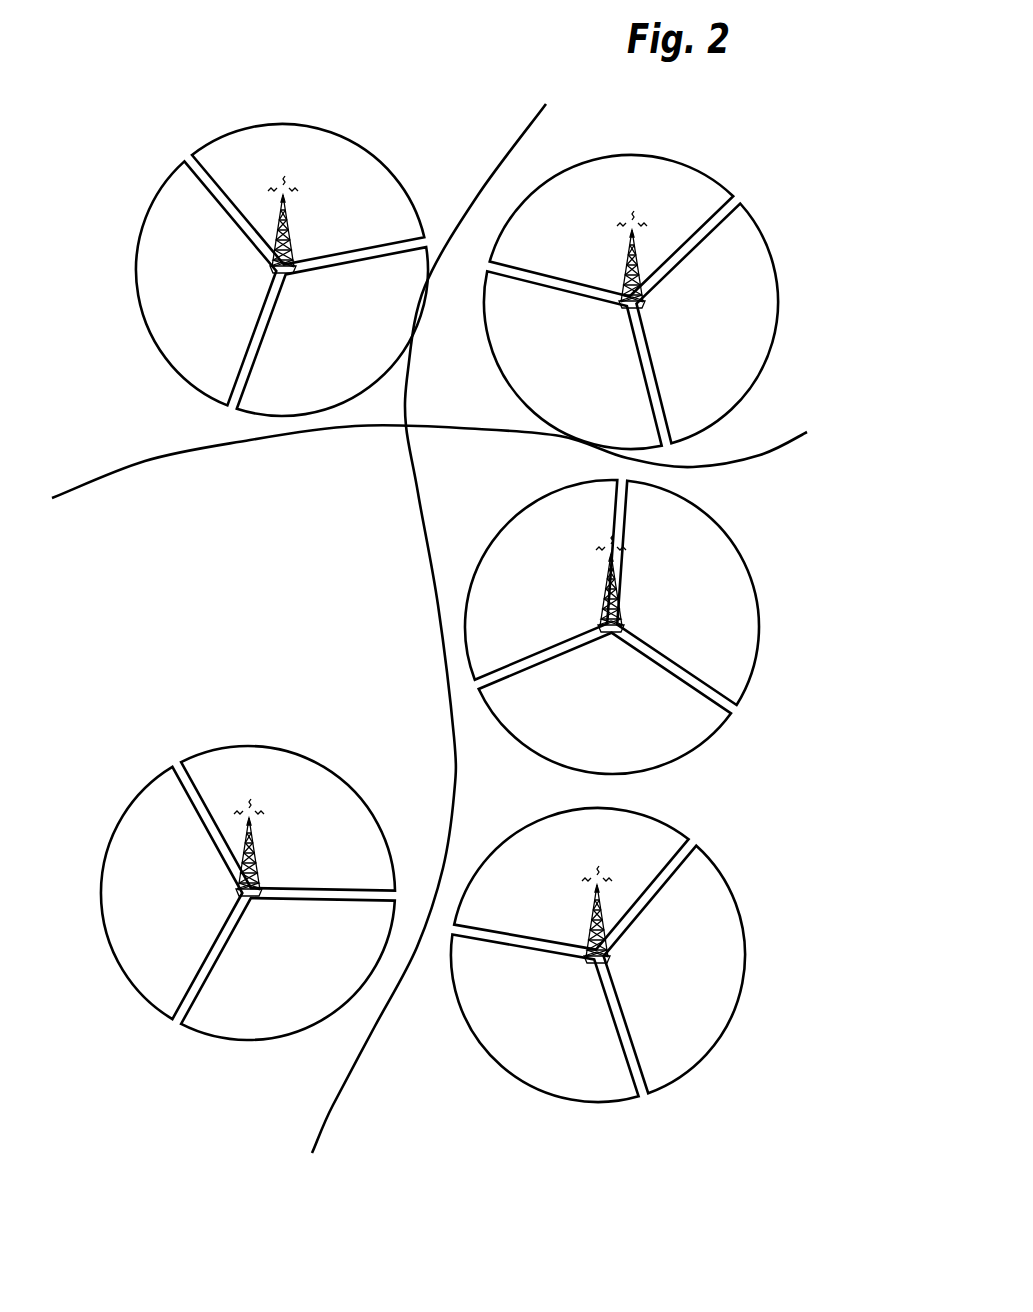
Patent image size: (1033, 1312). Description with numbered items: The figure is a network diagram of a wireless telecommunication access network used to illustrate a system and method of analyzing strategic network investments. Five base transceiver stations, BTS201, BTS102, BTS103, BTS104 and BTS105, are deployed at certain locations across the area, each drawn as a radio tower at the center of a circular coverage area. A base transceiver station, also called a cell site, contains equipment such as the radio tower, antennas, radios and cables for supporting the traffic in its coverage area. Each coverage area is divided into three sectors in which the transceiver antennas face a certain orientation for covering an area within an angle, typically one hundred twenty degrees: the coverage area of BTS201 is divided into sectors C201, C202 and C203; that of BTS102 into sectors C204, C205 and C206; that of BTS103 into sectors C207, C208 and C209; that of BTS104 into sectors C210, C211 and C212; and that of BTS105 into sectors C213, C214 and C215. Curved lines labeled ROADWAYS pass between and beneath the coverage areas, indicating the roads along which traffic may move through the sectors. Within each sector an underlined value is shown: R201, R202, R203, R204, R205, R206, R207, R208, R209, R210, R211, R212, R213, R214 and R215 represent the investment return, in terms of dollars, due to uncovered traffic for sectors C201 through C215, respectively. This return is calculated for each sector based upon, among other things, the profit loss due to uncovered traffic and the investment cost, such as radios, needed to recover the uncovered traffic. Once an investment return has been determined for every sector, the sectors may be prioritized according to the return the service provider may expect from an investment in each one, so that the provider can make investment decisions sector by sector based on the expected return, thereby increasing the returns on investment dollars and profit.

The sector C201 is at (287, 188).
The sector C202 is at (168, 283).
The sector C203 is at (303, 341).
The sector C204 is at (631, 221).
The sector C205 is at (735, 324).
The sector C206 is at (543, 360).
The sector C207 is at (715, 593).
The sector C208 is at (537, 575).
The sector C209 is at (632, 703).
The sector C210 is at (292, 814).
The sector C211 is at (147, 893).
The sector C212 is at (268, 979).
The sector C213 is at (597, 875).
The sector C214 is at (705, 969).
The sector C215 is at (528, 1018).
The investment return R201 is at (360, 206).
The investment return R202 is at (225, 312).
The investment return R203 is at (360, 342).
The investment return R204 is at (648, 206).
The investment return R205 is at (735, 341).
The investment return R206 is at (588, 366).
The investment return R207 is at (718, 612).
The investment return R208 is at (562, 562).
The investment return R209 is at (620, 709).
The investment return R210 is at (333, 834).
The investment return R211 is at (193, 922).
The investment return R212 is at (322, 969).
The investment return R213 is at (567, 881).
The investment return R214 is at (698, 999).
The investment return R215 is at (560, 1012).
The base transceiver station BTS201 is at (272, 267).
The base transceiver station BTS102 is at (622, 272).
The base transceiver station BTS103 is at (597, 625).
The base transceiver station BTS104 is at (238, 885).
The base transceiver station BTS105 is at (610, 958).
The roadways ROADWAYS is at (416, 489).